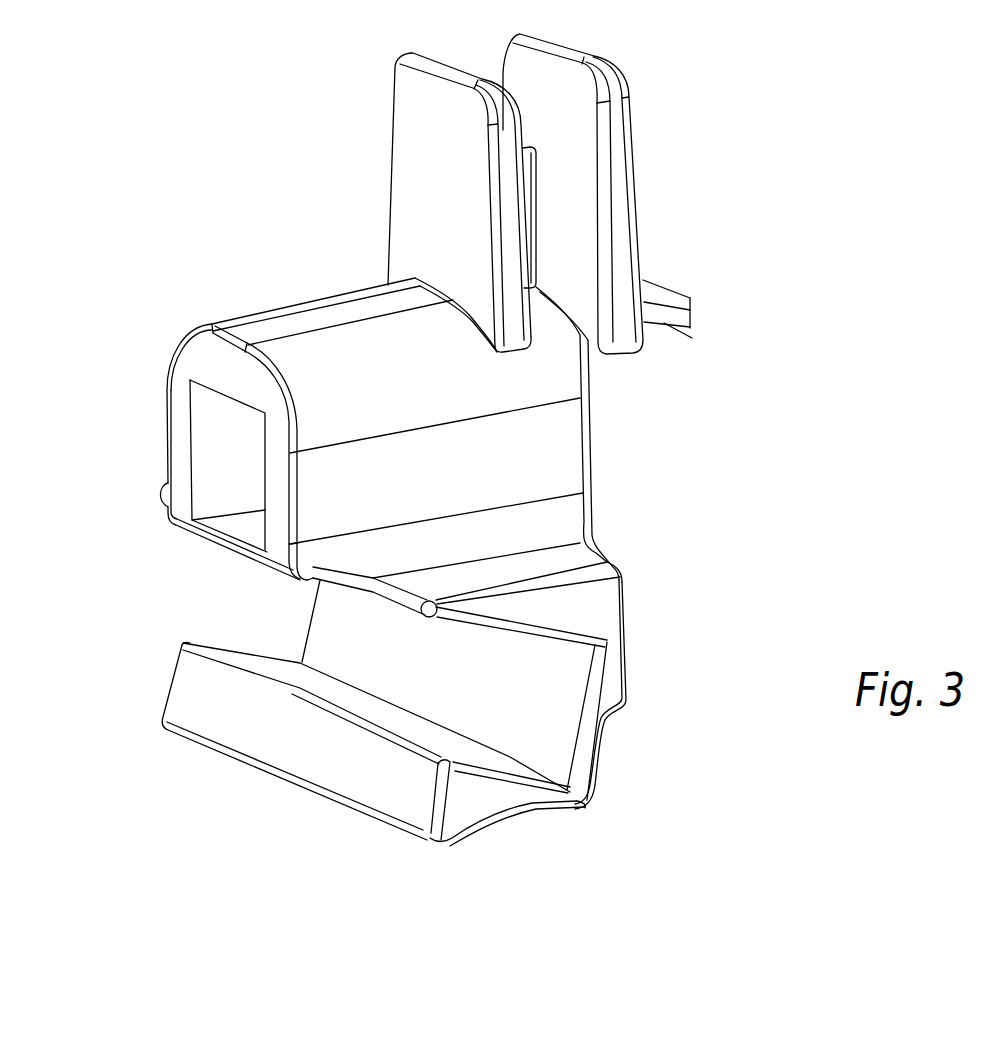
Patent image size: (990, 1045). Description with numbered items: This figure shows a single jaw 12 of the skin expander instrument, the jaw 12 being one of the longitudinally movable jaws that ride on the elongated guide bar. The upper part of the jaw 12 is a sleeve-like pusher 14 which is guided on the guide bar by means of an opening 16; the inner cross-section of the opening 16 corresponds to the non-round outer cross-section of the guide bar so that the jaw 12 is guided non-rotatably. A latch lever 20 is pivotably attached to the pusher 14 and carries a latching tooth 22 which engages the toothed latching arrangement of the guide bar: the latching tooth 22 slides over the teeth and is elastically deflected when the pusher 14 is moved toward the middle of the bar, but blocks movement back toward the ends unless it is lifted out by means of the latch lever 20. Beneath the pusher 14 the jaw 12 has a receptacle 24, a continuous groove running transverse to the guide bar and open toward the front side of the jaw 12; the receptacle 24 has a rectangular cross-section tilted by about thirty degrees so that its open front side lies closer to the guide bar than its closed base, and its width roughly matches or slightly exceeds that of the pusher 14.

The jaw 12 is at (170, 238).
The pusher 14 is at (375, 447).
The opening 16 is at (222, 453).
The latch lever 20 is at (614, 143).
The latching tooth 22 is at (696, 331).
The receptacle 24 is at (521, 717).